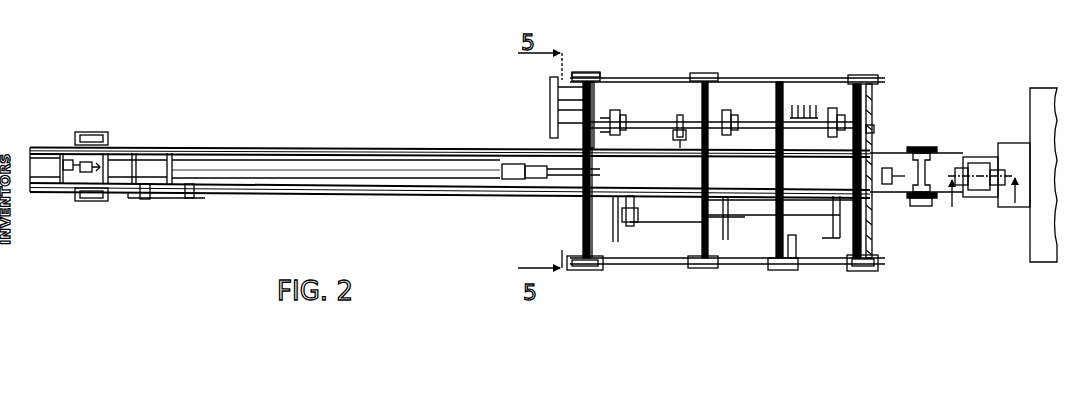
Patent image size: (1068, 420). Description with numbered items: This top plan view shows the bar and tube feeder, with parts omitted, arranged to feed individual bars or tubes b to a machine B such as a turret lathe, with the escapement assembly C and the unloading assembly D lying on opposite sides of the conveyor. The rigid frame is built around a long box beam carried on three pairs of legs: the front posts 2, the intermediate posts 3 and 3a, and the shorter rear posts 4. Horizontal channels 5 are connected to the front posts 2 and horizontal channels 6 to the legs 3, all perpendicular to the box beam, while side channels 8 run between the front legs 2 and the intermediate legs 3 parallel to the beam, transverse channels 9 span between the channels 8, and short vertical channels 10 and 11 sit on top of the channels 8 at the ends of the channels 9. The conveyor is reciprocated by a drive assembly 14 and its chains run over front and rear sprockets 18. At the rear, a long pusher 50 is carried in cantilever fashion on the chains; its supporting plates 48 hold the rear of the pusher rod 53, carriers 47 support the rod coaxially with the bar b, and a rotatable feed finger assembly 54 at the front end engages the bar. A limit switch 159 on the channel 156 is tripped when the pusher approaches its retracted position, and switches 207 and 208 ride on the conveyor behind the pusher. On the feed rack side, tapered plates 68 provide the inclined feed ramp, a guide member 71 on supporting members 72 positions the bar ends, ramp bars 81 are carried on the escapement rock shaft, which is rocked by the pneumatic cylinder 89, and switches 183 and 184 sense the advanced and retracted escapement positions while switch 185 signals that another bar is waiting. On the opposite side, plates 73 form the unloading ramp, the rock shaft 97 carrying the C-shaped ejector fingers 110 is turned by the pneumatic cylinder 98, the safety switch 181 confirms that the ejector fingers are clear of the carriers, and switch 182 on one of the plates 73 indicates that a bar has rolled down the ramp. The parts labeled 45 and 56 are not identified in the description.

The front posts 2 is at (870, 82).
The intermediate posts 3 is at (590, 270).
The intermediate posts 3a is at (598, 72).
The rear posts 4 is at (105, 134).
The horizontal channels 5 is at (874, 150).
The horizontal channels 6 is at (585, 203).
The horizontal side channels 8 is at (675, 78).
The transverse horizontal channels 9 is at (703, 107).
The short vertical channels 10 is at (716, 77).
The short vertical channels 11 is at (722, 268).
The drive assembly 14 is at (930, 223).
The sprockets 18 is at (32, 140).
The shaft coupling 45 is at (820, 153).
The carriers 47 is at (290, 152).
The supporting plates 48 is at (178, 150).
The pusher 50 is at (243, 168).
The pusher rod 53 is at (405, 180).
The feed finger assembly 54 is at (540, 183).
The drive block 56 is at (982, 165).
The feed rack plates 68 is at (551, 96).
The guide member 71 is at (551, 108).
The longitudinal supporting members 72 is at (551, 124).
The unloading ramp plates 73 is at (582, 226).
The ramp bars 81 is at (628, 112).
The pneumatic cylinder 89 is at (676, 215).
The rock shaft 97 is at (753, 223).
The pneumatic cylinder 98 is at (630, 160).
The ejector fingers 110 is at (615, 232).
The channel 156 is at (208, 200).
The limit switch 159 is at (143, 200).
The safety switch 181 is at (600, 253).
The switch 182 is at (790, 250).
The switch 183 is at (595, 117).
The switch 184 is at (772, 118).
The switch 185 is at (807, 100).
The switch 207 is at (88, 172).
The switch 208 is at (66, 158).
The bar or tube b is at (560, 168).
The machine B is at (1029, 88).
The escapement assembly C is at (902, 102).
The unloading assembly D is at (885, 236).